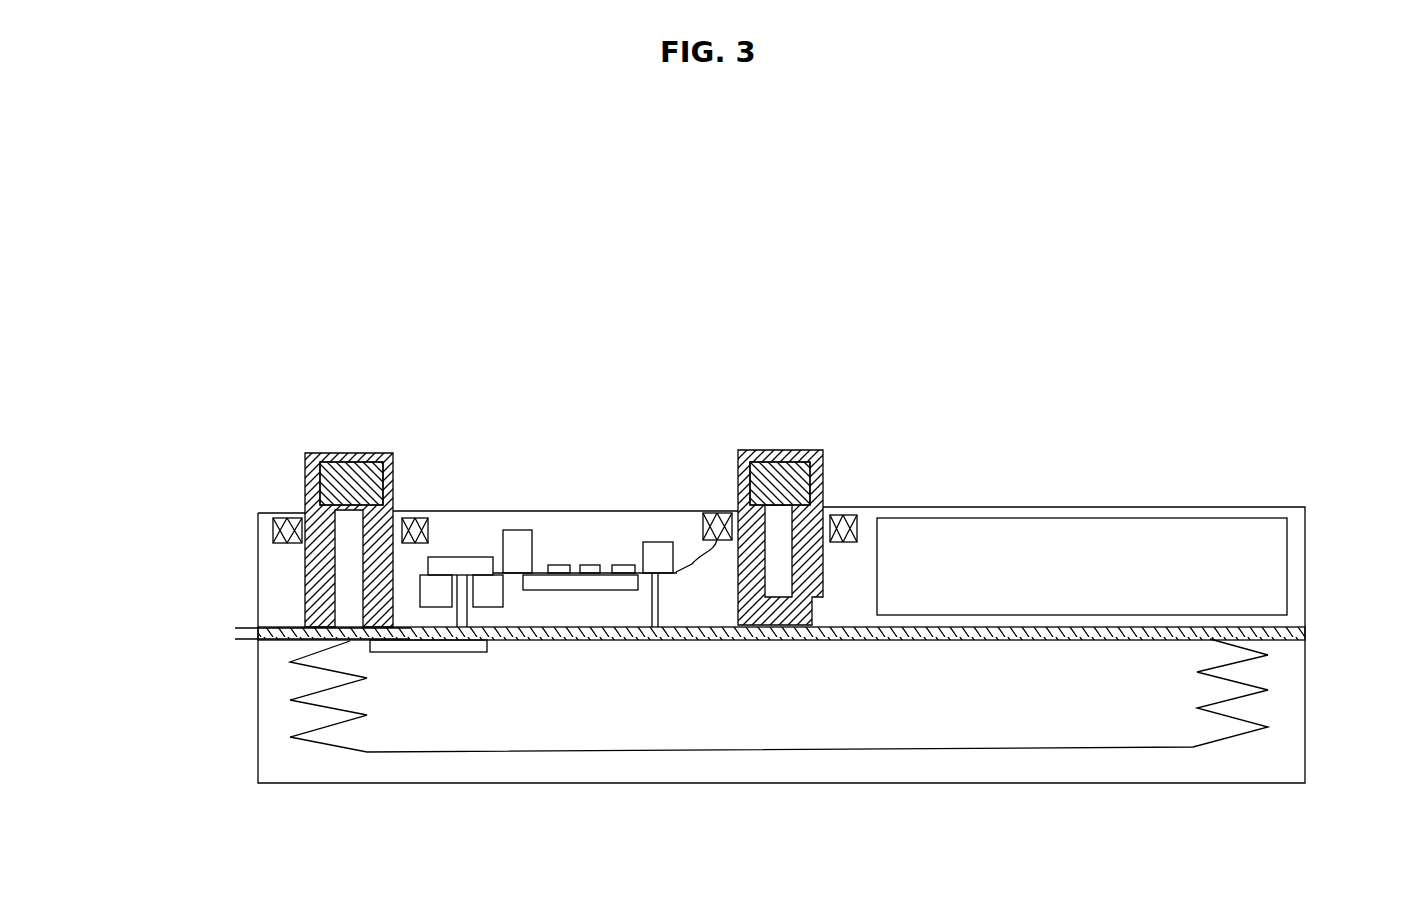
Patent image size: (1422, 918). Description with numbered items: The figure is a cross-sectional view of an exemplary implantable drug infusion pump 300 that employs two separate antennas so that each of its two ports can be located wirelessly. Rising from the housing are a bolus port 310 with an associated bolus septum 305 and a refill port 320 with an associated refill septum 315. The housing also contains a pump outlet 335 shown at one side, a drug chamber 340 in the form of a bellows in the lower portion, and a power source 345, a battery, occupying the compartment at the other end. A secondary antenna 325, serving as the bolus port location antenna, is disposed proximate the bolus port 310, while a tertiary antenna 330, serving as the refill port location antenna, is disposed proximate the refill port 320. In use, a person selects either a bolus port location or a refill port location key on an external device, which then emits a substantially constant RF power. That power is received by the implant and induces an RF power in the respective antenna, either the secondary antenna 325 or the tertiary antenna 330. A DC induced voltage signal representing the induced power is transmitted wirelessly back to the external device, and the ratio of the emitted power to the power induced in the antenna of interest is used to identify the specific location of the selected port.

The implantable drug infusion pump 300 is at (781, 693).
The bolus septum 305 is at (328, 482).
The bolus port 310 is at (305, 425).
The refill septum 315 is at (797, 472).
The refill port 320 is at (855, 443).
The secondary antenna 325 is at (268, 525).
The tertiary antenna 330 is at (714, 507).
The pump outlet 335 is at (208, 647).
The drug chamber 340 is at (1050, 687).
The power source 345 is at (1175, 572).